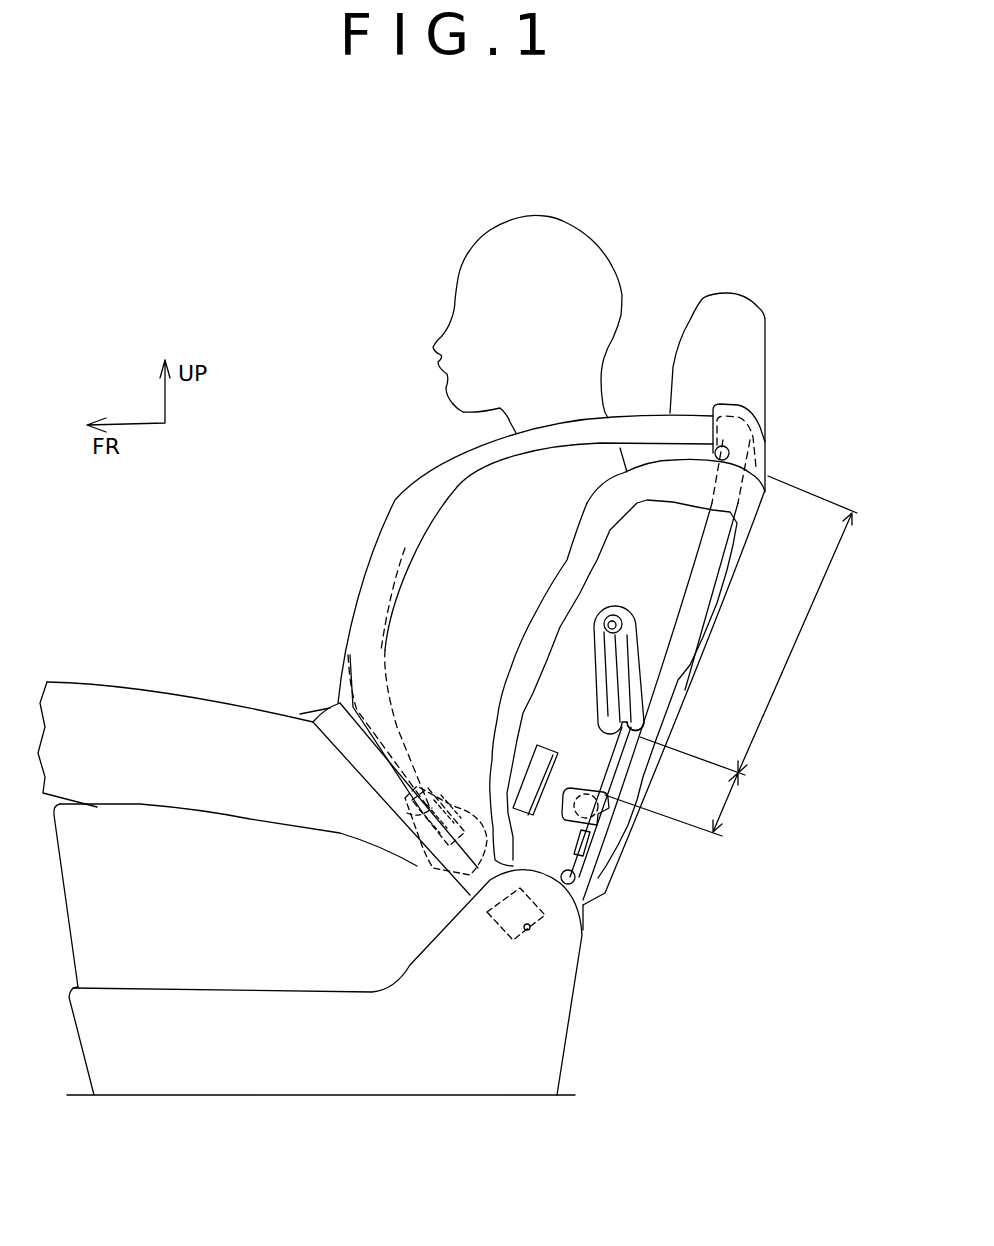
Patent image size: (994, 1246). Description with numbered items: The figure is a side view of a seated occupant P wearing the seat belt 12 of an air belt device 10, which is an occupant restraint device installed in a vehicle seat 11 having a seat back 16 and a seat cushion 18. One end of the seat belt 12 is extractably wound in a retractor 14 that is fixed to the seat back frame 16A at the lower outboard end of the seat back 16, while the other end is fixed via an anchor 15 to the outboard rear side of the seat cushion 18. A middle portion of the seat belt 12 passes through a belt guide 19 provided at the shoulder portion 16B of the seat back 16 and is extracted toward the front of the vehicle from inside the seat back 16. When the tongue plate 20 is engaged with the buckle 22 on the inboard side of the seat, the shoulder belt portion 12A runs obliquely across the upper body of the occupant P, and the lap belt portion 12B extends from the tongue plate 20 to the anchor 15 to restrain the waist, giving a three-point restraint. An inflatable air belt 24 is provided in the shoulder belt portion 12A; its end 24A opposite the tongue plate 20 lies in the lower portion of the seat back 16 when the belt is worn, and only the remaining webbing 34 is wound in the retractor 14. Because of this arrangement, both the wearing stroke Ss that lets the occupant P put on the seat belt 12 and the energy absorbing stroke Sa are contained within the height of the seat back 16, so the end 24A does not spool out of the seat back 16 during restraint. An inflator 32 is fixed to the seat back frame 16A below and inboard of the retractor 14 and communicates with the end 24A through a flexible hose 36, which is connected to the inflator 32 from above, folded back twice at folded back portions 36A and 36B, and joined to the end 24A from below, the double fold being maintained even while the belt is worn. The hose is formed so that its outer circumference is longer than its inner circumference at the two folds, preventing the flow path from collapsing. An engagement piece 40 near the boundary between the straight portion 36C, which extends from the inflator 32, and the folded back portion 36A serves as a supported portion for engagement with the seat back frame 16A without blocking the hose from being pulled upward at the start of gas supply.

The air belt device 10 is at (795, 460).
The vehicle seat 11 is at (288, 478).
The seat belt 12 is at (343, 717).
The shoulder belt portion 12A is at (358, 558).
The lap belt portion 12B is at (330, 700).
The retractor 14 is at (628, 840).
The anchor 15 is at (523, 932).
The seat back 16 is at (527, 652).
The seat back frame 16A is at (575, 884).
The shoulder portion 16B is at (662, 462).
The seat cushion 18 is at (332, 960).
The belt guide 19 is at (767, 440).
The tongue plate 20 is at (408, 853).
The buckle 22 is at (437, 870).
The air belt 24 is at (420, 500).
The end of the air belt 24A is at (640, 722).
The inflator 32 is at (602, 844).
The webbing 34 is at (608, 780).
The flexible hose 36 is at (592, 694).
The folded back portion 36A is at (635, 592).
The folded back portion 36B is at (607, 757).
The straight portion 36C is at (562, 712).
The engagement piece 40 is at (644, 644).
The occupant P is at (630, 257).
The energy absorbing stroke Sa is at (748, 625).
The wearing stroke Ss is at (681, 804).